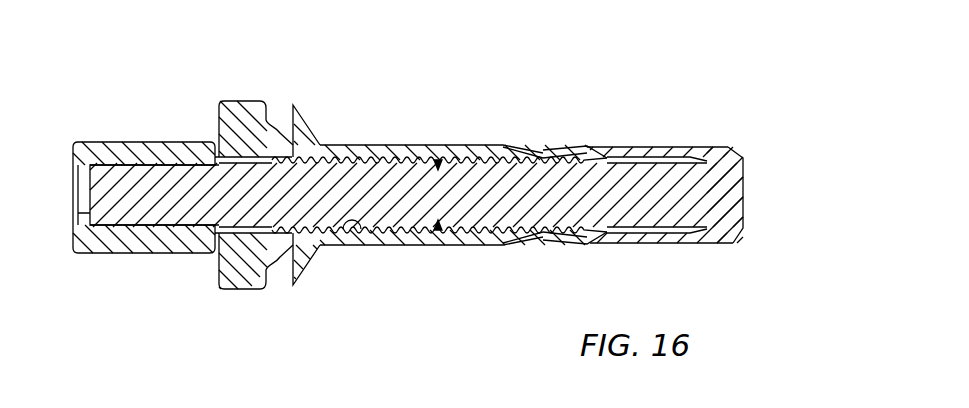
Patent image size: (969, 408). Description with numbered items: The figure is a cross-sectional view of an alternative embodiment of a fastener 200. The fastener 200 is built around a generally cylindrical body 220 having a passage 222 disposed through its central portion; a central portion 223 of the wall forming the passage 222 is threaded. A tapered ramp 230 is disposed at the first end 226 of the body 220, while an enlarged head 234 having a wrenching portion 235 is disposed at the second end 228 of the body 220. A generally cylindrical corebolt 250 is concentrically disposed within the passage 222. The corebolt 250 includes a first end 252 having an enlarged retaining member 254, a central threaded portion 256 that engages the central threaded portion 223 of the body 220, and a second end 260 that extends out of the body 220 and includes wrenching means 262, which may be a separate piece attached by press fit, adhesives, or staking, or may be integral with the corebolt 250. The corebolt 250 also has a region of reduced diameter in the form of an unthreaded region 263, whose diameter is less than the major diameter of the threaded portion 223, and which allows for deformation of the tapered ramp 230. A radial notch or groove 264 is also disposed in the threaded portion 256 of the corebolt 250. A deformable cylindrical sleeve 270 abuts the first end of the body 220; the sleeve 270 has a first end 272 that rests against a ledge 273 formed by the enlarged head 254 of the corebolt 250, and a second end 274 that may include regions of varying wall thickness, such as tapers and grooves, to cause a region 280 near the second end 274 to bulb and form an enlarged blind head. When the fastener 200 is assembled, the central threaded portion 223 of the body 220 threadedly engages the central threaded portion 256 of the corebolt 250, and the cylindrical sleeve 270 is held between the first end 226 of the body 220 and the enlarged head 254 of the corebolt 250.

The fastener 200 is at (603, 62).
The body 220 is at (363, 145).
The passage 222 is at (485, 160).
The central threaded portion 223 is at (365, 229).
The first end 226 is at (522, 150).
The second end 228 is at (292, 106).
The tapered ramp 230 is at (532, 238).
The enlarged head 234 is at (312, 298).
The wrenching portion 235 is at (229, 107).
The corebolt 250 is at (413, 213).
The first end 252 is at (672, 157).
The enlarged retaining member 254 is at (728, 183).
The central threaded portion 256 is at (406, 161).
The second end 260 is at (153, 170).
The wrenching means 262 is at (137, 243).
The unthreaded region 263 is at (660, 178).
The radial notch 264 is at (439, 161).
The cylindrical sleeve 270 is at (618, 150).
The first end 272 is at (693, 237).
The ledge 273 is at (697, 150).
The second end 274 is at (570, 148).
The region 280 is at (592, 243).